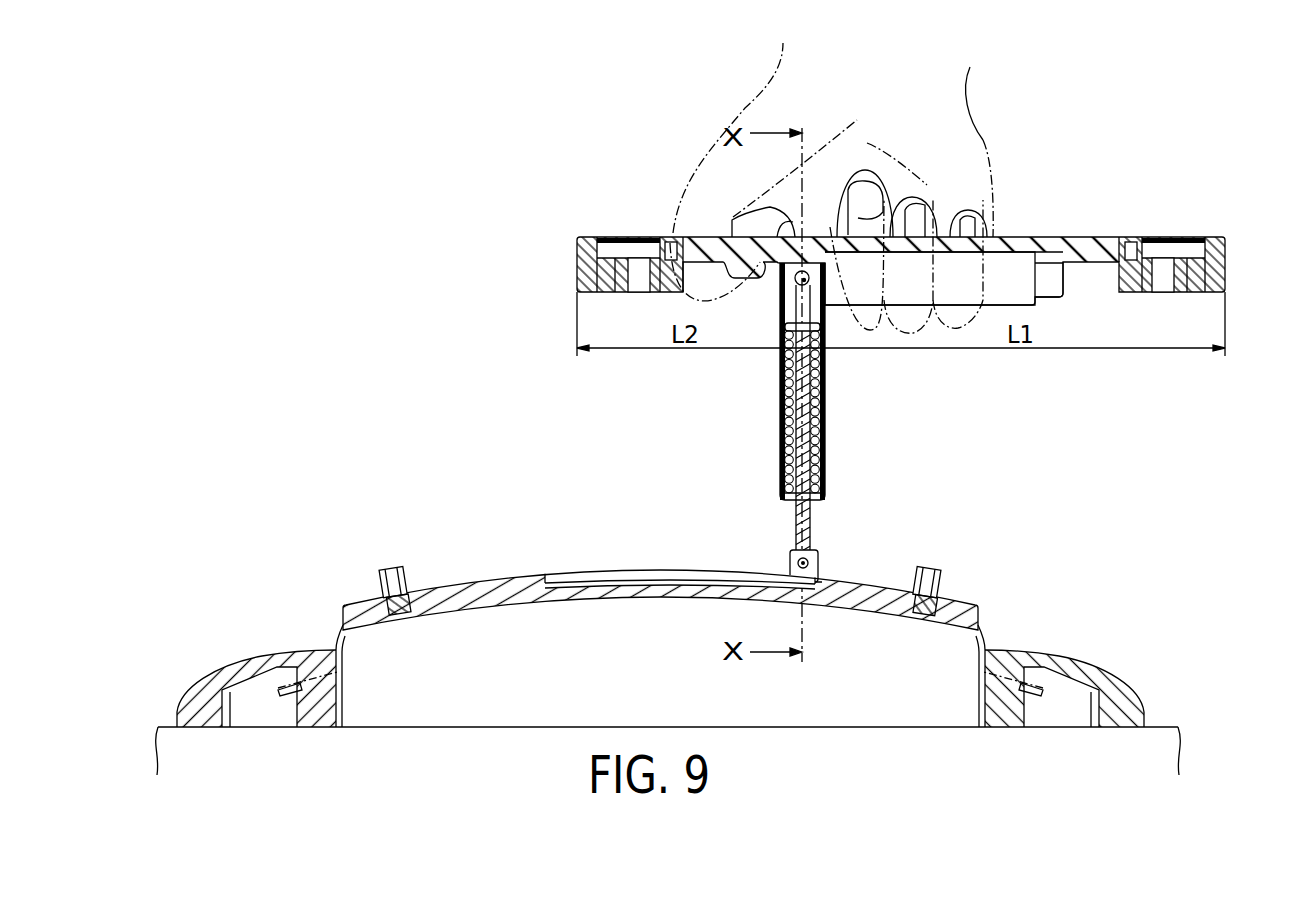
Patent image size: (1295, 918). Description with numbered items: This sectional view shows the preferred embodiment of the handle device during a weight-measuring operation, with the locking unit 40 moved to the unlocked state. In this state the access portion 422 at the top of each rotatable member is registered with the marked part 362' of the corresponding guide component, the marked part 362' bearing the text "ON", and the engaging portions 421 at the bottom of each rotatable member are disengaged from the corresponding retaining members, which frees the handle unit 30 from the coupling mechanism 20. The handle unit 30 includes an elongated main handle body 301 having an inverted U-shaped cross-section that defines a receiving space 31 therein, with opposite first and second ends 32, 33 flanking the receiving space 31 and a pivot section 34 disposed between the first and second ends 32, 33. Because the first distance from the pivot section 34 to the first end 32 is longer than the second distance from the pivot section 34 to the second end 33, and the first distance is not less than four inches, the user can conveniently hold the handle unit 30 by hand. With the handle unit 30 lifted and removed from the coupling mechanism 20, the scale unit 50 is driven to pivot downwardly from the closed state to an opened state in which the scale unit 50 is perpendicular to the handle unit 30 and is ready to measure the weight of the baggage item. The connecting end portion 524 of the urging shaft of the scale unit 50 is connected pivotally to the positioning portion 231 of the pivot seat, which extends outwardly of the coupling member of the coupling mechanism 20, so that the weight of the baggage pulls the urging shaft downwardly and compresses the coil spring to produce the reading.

The coupling mechanism 20 is at (522, 576).
The handle unit 30 is at (1013, 236).
The receiving space 31 is at (855, 272).
The first end 32 is at (1227, 238).
The second end 33 is at (577, 247).
The pivot section 34 is at (797, 289).
The locking unit 40 is at (1197, 236).
The scale unit 50 is at (835, 405).
The positioning portion 231 is at (788, 560).
The main handle body 301 is at (1086, 237).
The marked part 362' is at (871, 207).
The engaging portions 421 is at (1195, 289).
The access portion 422 is at (637, 237).
The connecting end portion 524 is at (812, 556).